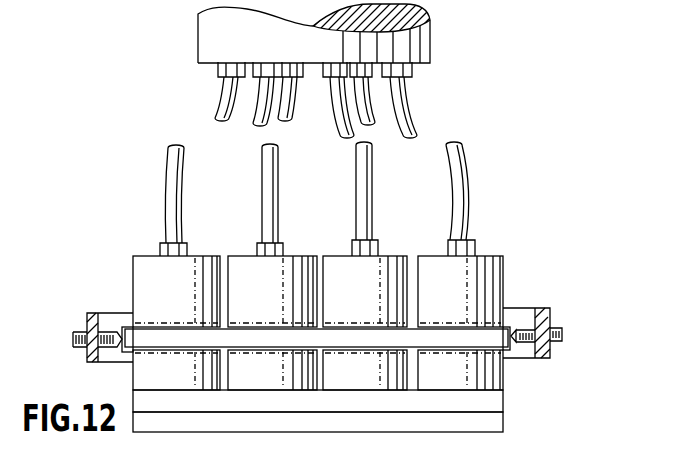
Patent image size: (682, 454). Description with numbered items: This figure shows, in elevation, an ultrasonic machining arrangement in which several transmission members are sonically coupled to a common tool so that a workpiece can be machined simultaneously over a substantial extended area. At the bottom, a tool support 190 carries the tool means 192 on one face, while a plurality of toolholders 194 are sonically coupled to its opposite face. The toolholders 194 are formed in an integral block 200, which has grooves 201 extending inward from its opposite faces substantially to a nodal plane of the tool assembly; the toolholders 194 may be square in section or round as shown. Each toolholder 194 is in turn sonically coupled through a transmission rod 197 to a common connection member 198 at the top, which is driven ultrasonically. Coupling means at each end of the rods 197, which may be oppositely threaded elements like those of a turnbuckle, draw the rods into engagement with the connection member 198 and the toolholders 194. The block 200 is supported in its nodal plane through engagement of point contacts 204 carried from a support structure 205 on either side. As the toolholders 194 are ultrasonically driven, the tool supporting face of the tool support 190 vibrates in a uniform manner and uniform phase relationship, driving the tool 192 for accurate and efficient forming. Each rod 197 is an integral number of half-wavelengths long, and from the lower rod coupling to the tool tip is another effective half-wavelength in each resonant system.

The tool support 190 is at (505, 397).
The tool means 192 is at (505, 423).
The toolholders 194 is at (193, 300).
The transmission rods 197 is at (290, 120).
The connection member 198 is at (420, 44).
The integral block 200 is at (500, 286).
The grooves 201 is at (221, 257).
The point contacts 204 is at (110, 350).
The support structure 205 is at (86, 316).